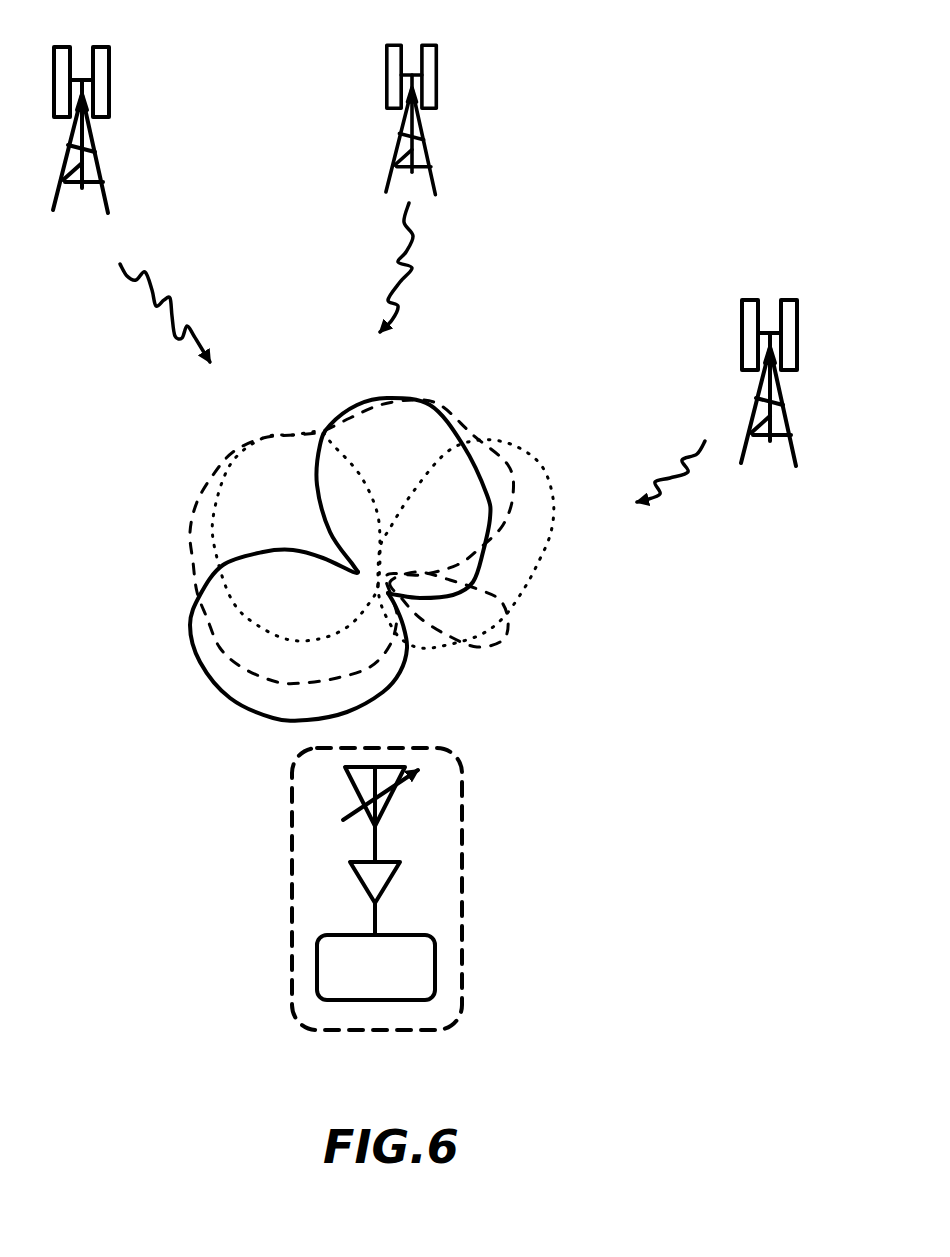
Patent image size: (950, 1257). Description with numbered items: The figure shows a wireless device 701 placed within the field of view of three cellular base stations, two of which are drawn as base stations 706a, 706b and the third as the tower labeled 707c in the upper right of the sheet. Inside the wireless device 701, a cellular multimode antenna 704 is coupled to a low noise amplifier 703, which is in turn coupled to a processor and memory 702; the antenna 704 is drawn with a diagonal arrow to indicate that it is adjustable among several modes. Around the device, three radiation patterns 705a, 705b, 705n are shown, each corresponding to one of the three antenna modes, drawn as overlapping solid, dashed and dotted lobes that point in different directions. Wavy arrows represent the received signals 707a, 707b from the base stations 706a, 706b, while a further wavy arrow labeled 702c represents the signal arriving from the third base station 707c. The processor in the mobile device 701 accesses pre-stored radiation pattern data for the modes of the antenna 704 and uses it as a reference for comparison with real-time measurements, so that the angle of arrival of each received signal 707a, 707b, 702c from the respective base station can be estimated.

The wireless device 701 is at (368, 1030).
The processor and memory 702 is at (437, 968).
The signal from base station 706c 702c is at (658, 472).
The low noise amplifier 703 is at (395, 875).
The cellular multimode antenna 704 is at (395, 785).
The radiation pattern 705a is at (208, 677).
The radiation pattern 705b is at (468, 420).
The radiation pattern 705n is at (540, 556).
The cellular base station 706a is at (112, 78).
The cellular base station 706b is at (435, 75).
The received signal 707a is at (168, 297).
The received signal 707b is at (410, 268).
The received signal 707c is at (737, 332).